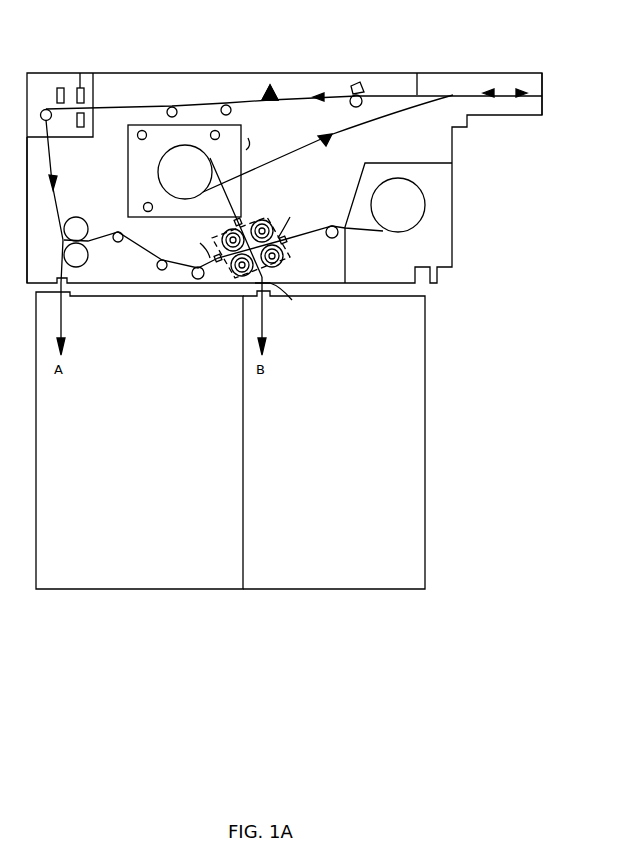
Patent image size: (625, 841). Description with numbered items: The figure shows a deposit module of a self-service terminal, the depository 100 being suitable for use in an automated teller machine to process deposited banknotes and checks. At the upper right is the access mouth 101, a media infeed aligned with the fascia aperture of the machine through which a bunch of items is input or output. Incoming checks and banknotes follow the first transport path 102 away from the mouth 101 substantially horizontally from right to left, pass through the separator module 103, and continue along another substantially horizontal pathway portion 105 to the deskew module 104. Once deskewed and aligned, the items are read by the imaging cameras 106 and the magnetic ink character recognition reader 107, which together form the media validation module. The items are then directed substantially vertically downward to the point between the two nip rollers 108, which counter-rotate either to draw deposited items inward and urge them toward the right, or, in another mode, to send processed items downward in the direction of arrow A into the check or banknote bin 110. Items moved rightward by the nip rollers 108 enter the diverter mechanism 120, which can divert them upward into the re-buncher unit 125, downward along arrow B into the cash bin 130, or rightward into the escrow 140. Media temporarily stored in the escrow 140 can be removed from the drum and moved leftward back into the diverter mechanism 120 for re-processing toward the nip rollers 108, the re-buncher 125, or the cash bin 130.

The depository 100 is at (198, 103).
The access mouth 101 is at (547, 95).
The first transport path 102 is at (417, 73).
The separator module 103 is at (352, 83).
The deskew module 104 is at (278, 72).
The pathway portion 105 is at (292, 86).
The imaging cameras 106 is at (97, 152).
The Magnetic Ink Character Recognition reader 107 is at (60, 87).
The nip rollers 108 is at (72, 216).
The check or banknote bin 110 is at (156, 471).
The diverter mechanism 120 is at (272, 220).
The re-buncher unit 125 is at (328, 143).
The cash bin 130 is at (341, 471).
The escrow 140 is at (445, 206).